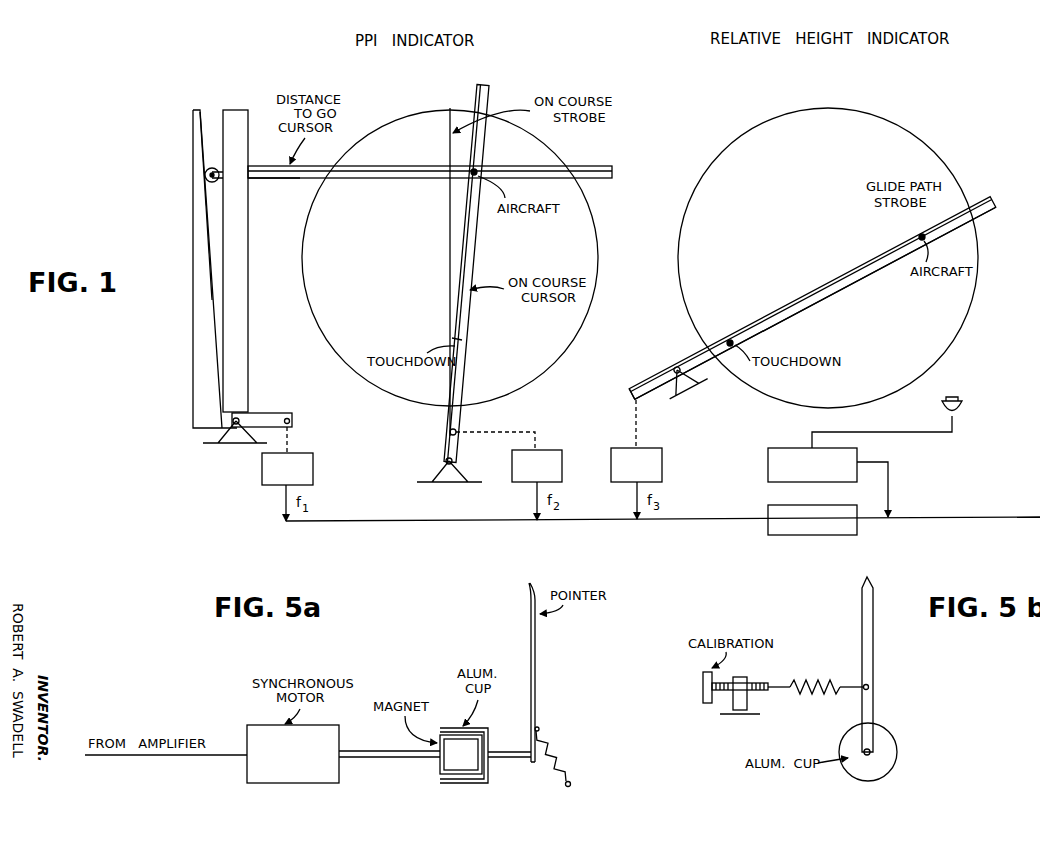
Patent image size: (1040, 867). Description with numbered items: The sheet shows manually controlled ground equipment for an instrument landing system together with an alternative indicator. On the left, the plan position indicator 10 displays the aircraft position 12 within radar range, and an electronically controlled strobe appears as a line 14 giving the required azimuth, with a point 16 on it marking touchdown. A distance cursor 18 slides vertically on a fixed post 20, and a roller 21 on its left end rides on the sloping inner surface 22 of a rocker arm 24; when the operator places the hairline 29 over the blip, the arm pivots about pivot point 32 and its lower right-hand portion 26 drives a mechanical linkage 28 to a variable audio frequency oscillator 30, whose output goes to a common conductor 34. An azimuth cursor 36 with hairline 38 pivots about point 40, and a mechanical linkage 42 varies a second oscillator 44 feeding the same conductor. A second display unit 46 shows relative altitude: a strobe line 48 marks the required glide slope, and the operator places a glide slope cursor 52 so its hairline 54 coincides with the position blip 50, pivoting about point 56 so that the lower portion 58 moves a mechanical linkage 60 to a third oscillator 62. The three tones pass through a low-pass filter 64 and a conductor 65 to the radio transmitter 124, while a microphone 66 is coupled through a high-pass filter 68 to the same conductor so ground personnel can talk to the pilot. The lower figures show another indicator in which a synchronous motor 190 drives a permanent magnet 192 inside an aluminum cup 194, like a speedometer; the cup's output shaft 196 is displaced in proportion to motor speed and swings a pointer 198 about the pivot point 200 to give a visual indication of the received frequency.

In FIG. 1, the plan position indicator 10 is at (302, 308).
In FIG. 1, the aircraft position 12 is at (477, 171).
In FIG. 1, the strobe line 14 is at (450, 204).
In FIG. 1, the touchdown point 16 is at (455, 342).
In FIG. 1, the distance cursor 18 is at (331, 180).
In FIG. 1, the fixed post 20 is at (239, 249).
In FIG. 1, the roller 21 is at (205, 176).
In FIG. 1, the sloping inner surface 22 is at (211, 246).
In FIG. 1, the rocker arm 24 is at (193, 338).
In FIG. 1, the lower right-hand portion 26 is at (266, 415).
In FIG. 1, the mechanical linkage 28 is at (291, 440).
In FIG. 1, the hairline 29 is at (266, 180).
In FIG. 1, the variable audio frequency oscillator 30 is at (313, 468).
In FIG. 1, the pivot point 32 is at (240, 419).
In FIG. 1, the conductor 34 is at (372, 521).
In FIG. 1, the azimuth cursor 36 is at (489, 90).
In FIG. 1, the hairline 38 is at (477, 101).
In FIG. 1, the pivot point 40 is at (446, 464).
In FIG. 1, the mechanical linkage 42 is at (492, 430).
In FIG. 1, the variable audio frequency oscillator 44 is at (546, 450).
In FIG. 1, the display unit 46 is at (733, 138).
In FIG. 1, the strobe line 48 is at (958, 200).
In FIG. 1, the position blip 50 is at (925, 239).
In FIG. 1, the glide slope cursor 52 is at (993, 195).
In FIG. 1, the hairline 54 is at (976, 222).
In FIG. 1, the pivot point 56 is at (676, 366).
In FIG. 1, the lower portion 58 is at (636, 388).
In FIG. 1, the mechanical linkage 60 is at (640, 430).
In FIG. 1, the variable audio frequency oscillator 62 is at (662, 464).
In FIG. 1, the low-pass filter 64 is at (770, 505).
In FIG. 1, the conductor 65 is at (867, 513).
In FIG. 1, the microphone 66 is at (955, 420).
In FIG. 1, the high-pass filter 68 is at (780, 448).
In FIG. 1, the radio transmitter 124 is at (979, 493).
In FIG. 5A, the synchronous motor 190 is at (293, 754).
In FIG. 5A, the permanent magnet 192 is at (449, 762).
In FIG. 5A, the aluminum cup 194 is at (470, 783).
In FIG. 5B, the aluminum cup 194 is at (893, 767).
In FIG. 5A, the output shaft 196 is at (501, 748).
In FIG. 5A, the pointer 198 is at (536, 664).
In FIG. 5B, the pointer 198 is at (864, 632).
In FIG. 5B, the pivot point 200 is at (871, 750).